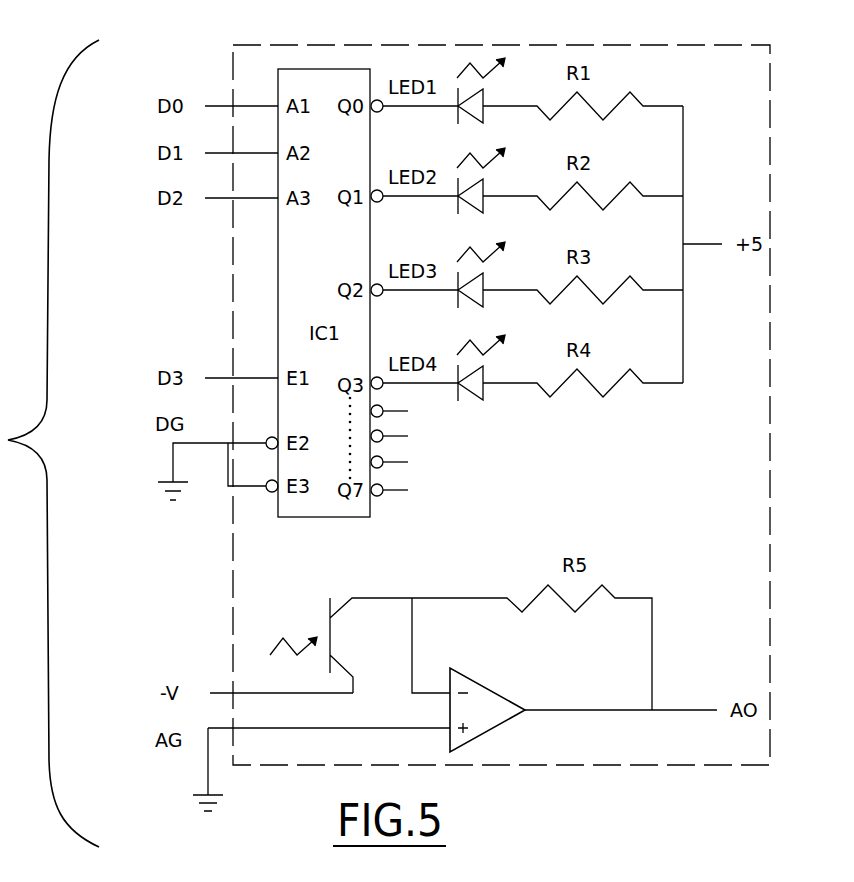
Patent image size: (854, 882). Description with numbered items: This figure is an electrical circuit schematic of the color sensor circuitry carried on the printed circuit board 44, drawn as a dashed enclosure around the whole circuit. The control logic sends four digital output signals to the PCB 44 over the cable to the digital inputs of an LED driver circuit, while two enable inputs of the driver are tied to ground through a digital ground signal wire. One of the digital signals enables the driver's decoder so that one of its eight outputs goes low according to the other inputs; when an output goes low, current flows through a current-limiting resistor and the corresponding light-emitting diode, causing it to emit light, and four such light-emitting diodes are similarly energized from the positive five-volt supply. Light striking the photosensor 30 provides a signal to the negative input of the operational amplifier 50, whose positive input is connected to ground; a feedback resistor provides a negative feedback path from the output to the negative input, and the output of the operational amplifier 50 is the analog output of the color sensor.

The photosensor 30 is at (313, 618).
The operational amplifier 50 is at (493, 689).
The printed circuit board 44 is at (630, 766).